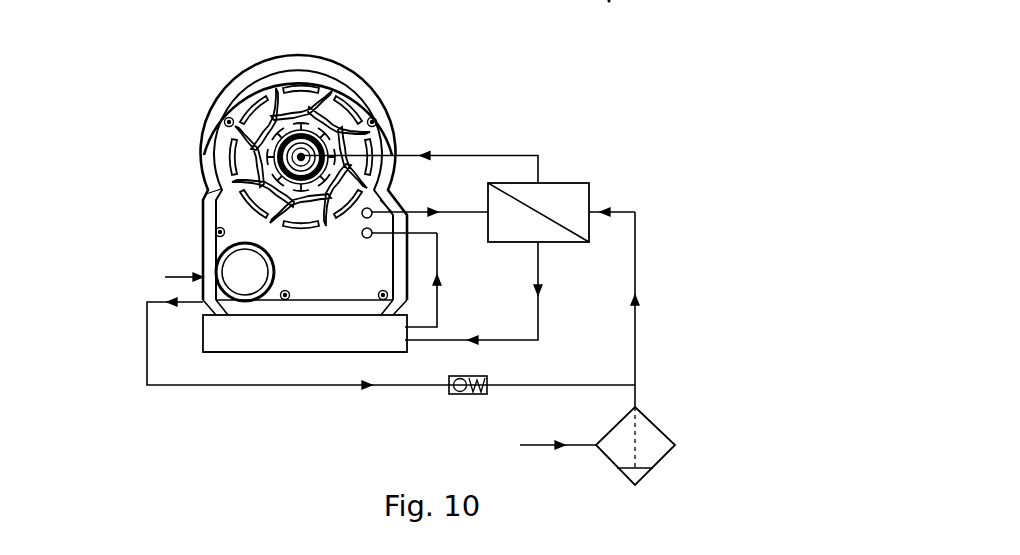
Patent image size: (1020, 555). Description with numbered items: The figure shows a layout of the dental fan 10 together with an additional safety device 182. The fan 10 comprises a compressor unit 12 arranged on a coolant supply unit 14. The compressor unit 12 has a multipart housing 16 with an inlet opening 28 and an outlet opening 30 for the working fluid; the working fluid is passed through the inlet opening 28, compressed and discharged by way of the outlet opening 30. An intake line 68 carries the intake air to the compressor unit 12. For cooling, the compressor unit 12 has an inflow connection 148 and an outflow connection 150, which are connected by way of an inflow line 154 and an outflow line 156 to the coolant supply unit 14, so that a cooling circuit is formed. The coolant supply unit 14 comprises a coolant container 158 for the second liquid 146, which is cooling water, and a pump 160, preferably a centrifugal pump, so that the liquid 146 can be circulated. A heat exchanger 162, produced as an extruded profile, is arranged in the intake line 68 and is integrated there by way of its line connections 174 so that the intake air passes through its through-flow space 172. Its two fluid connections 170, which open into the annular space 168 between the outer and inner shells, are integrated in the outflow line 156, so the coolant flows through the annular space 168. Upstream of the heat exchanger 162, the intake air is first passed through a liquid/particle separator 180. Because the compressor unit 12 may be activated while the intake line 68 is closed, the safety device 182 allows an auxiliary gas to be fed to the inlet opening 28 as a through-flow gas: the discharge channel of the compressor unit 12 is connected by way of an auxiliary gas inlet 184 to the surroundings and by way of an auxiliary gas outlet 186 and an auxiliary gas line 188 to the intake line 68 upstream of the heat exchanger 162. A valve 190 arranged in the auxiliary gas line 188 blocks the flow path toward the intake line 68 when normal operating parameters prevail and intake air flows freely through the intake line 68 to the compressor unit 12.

The fan 10 is at (204, 75).
The compressor unit 12 is at (168, 172).
The coolant supply unit 14 is at (178, 336).
The housing 16 is at (279, 56).
The inlet opening 28 is at (301, 157).
The outlet opening 30 is at (220, 260).
The intake line 68 is at (512, 155).
The second liquid 146 is at (220, 338).
The inflow connection 148 is at (366, 239).
The outflow connection 150 is at (362, 216).
The inflow line 154 is at (440, 310).
The outflow line 156 is at (448, 206).
The coolant container 158 is at (288, 338).
The pump 160 is at (392, 338).
The heat exchanger 162 is at (603, 232).
The annular space 168 is at (512, 240).
The fluid connections 170 is at (473, 208).
The through-flow space 172 is at (577, 192).
The line connections 174 is at (546, 183).
The liquid/particle separator 180 is at (665, 431).
The safety device 182 is at (132, 413).
The auxiliary gas inlet 184 is at (168, 274).
The auxiliary gas outlet 186 is at (175, 302).
The auxiliary gas line 188 is at (330, 388).
The valve 190 is at (470, 395).